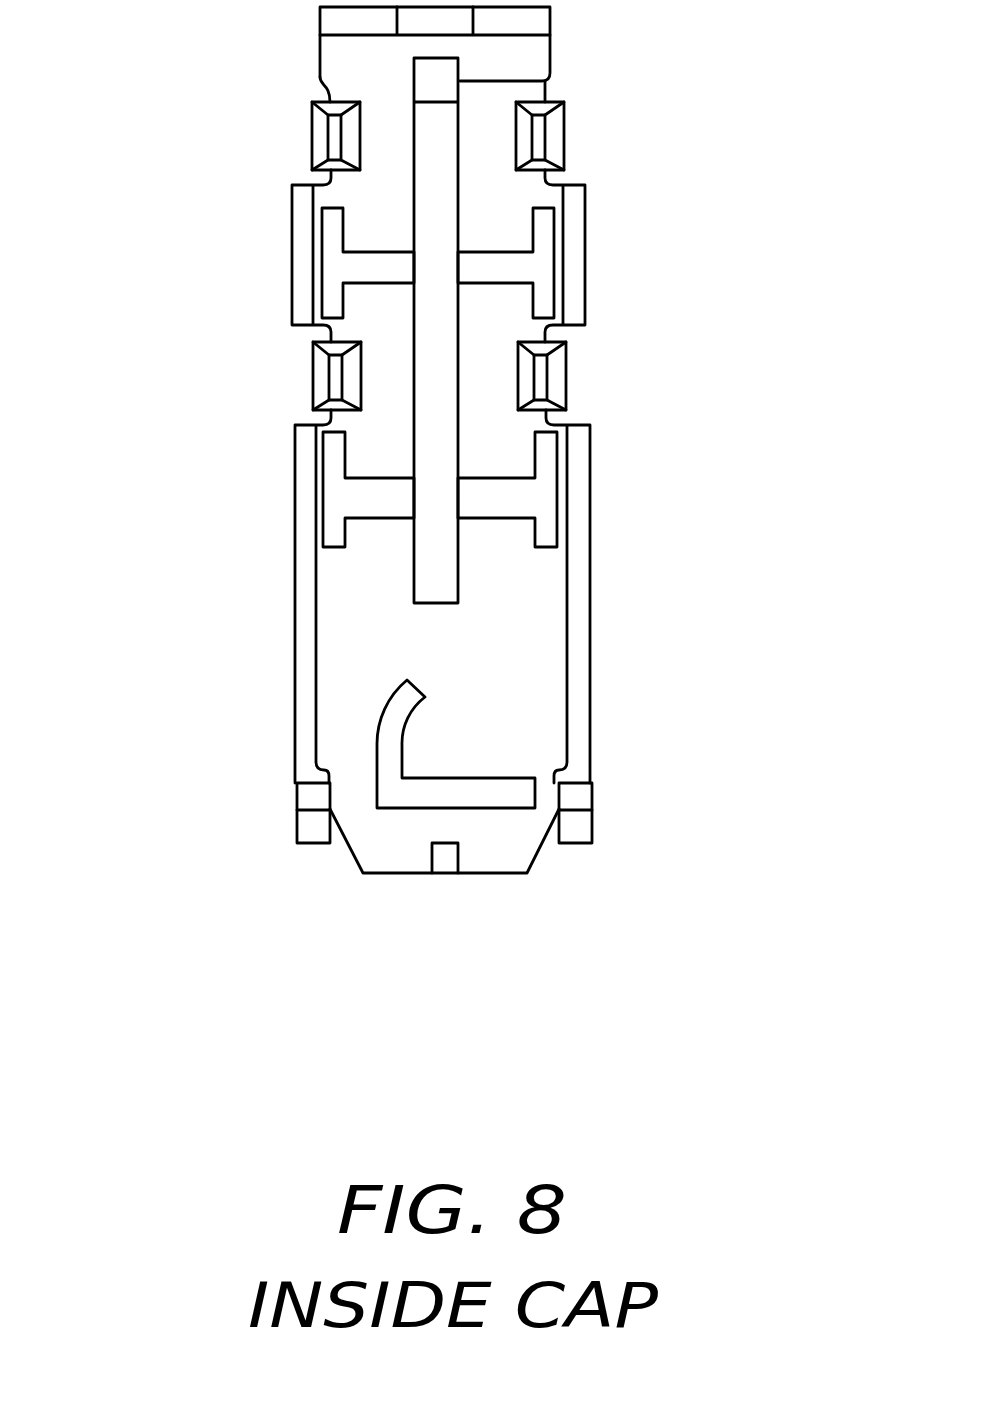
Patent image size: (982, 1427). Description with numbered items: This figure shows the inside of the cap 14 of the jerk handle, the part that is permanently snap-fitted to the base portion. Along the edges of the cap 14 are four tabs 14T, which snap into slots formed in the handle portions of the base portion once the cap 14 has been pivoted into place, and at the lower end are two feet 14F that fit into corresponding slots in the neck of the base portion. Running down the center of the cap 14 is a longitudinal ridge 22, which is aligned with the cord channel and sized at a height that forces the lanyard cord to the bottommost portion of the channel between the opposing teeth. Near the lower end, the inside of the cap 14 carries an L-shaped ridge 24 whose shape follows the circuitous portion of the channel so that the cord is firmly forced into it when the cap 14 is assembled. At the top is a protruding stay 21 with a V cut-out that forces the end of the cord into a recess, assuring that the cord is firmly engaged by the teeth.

The protruding stay 21 is at (548, 76).
The longitudinal ridge 22 is at (450, 330).
The cap 14 is at (592, 593).
The tabs 14T is at (322, 128).
The feet 14F is at (305, 826).
The L-shaped ridge 24 is at (383, 713).